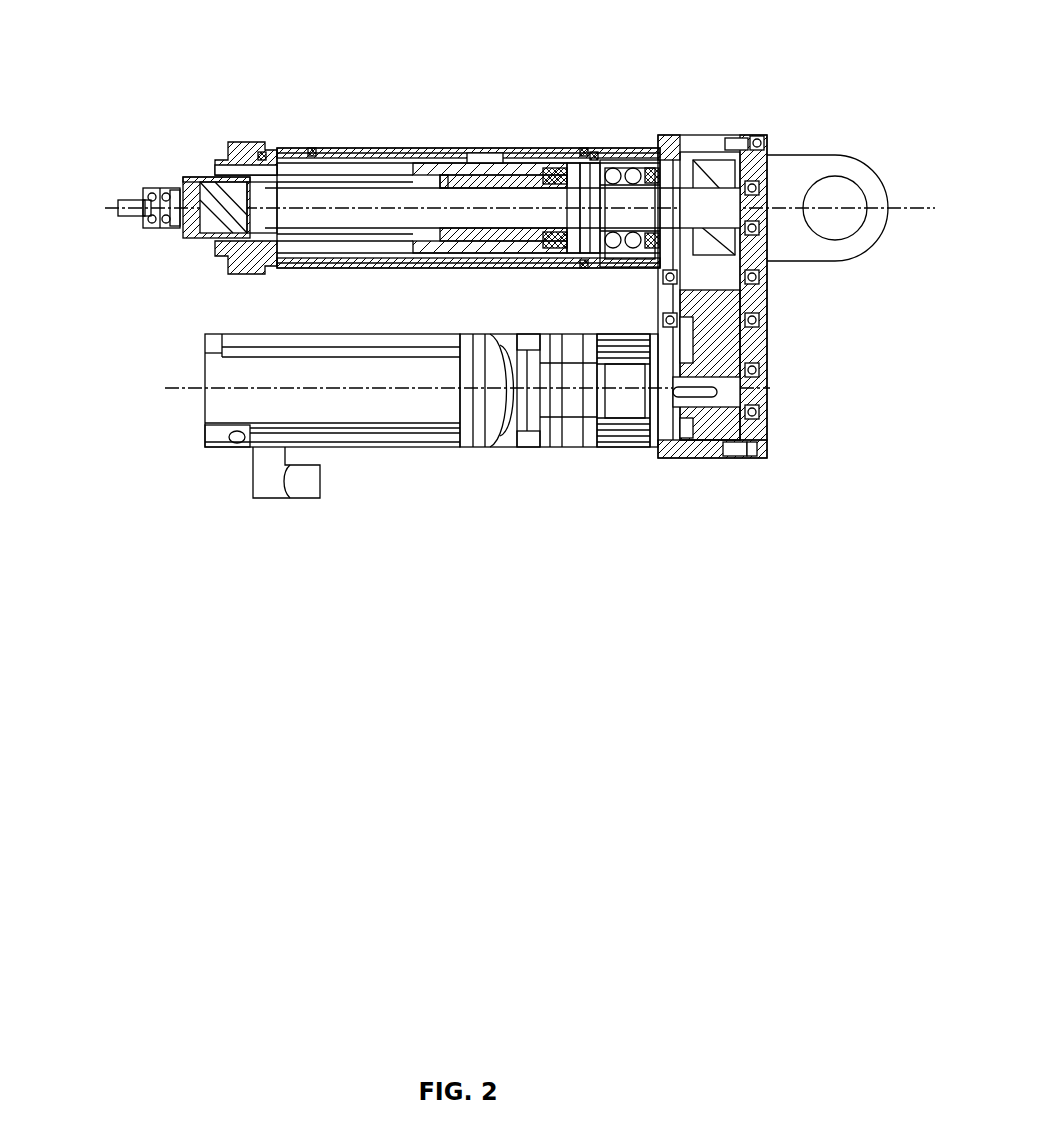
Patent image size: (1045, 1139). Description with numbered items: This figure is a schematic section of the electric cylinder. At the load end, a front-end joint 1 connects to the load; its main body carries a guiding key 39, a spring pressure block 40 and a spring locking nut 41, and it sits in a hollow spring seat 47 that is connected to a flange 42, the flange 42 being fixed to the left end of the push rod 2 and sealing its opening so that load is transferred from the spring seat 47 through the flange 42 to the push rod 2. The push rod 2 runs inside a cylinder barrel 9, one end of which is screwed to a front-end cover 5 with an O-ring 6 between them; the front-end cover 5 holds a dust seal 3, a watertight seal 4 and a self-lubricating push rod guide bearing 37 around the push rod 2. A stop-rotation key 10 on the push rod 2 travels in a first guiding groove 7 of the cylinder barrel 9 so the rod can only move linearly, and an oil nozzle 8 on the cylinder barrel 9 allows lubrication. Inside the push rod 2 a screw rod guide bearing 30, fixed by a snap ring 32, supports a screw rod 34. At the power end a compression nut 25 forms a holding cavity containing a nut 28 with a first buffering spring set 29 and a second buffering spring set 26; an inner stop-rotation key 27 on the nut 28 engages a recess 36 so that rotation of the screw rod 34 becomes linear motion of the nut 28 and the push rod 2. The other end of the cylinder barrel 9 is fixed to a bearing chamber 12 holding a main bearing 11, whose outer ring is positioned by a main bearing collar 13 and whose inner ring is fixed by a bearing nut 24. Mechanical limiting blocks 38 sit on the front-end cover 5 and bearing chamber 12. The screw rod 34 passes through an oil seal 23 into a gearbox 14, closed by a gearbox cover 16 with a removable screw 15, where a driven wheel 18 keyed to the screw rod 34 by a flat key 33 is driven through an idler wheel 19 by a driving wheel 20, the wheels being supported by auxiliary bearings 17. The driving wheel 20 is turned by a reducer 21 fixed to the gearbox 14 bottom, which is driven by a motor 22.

The front-end joint 1 is at (123, 203).
The push rod 2 is at (465, 147).
The dust seal 3 is at (208, 177).
The watertight seal 4 is at (224, 168).
The front-end cover 5 is at (258, 150).
The O-ring 6 is at (262, 156).
The first guiding groove 7 is at (350, 148).
The oil nozzle 8 is at (405, 147).
The cylinder barrel 9 is at (497, 150).
The stop-rotation key 10 is at (515, 147).
The main bearing 11 is at (614, 170).
The bearing chamber 12 is at (640, 156).
The main bearing collar 13 is at (662, 160).
The gearbox 14 is at (694, 143).
The removable screw 15 is at (762, 139).
The gearbox cover 16 is at (758, 166).
The auxiliary bearing 17 is at (761, 185).
The driven wheel 18 is at (714, 296).
The idler wheel 19 is at (742, 302).
The driving wheel 20 is at (746, 400).
The reducer 21 is at (563, 425).
The motor 22 is at (307, 425).
The oil seal 23 is at (678, 253).
The bearing nut 24 is at (606, 260).
The compression nut 25 is at (557, 243).
The second buffering spring set 26 is at (160, 190).
The inner stop-rotation key 27 is at (505, 239).
The nut 28 is at (477, 229).
The first buffering spring set 29 is at (126, 198).
The screw rod guide bearing 30 is at (280, 226).
The snap ring 32 is at (258, 232).
The flat key 33 is at (798, 210).
The screw rod 34 is at (380, 213).
The recess 36 is at (453, 172).
The push rod guide bearing 37 is at (257, 246).
The electric cylinder mechanical limiting block 38 is at (314, 148).
The guiding key 39 is at (148, 226).
The spring pressure block 40 is at (164, 226).
The spring locking nut 41 is at (180, 228).
The flange 42 is at (205, 218).
The spring seat 47 is at (141, 222).